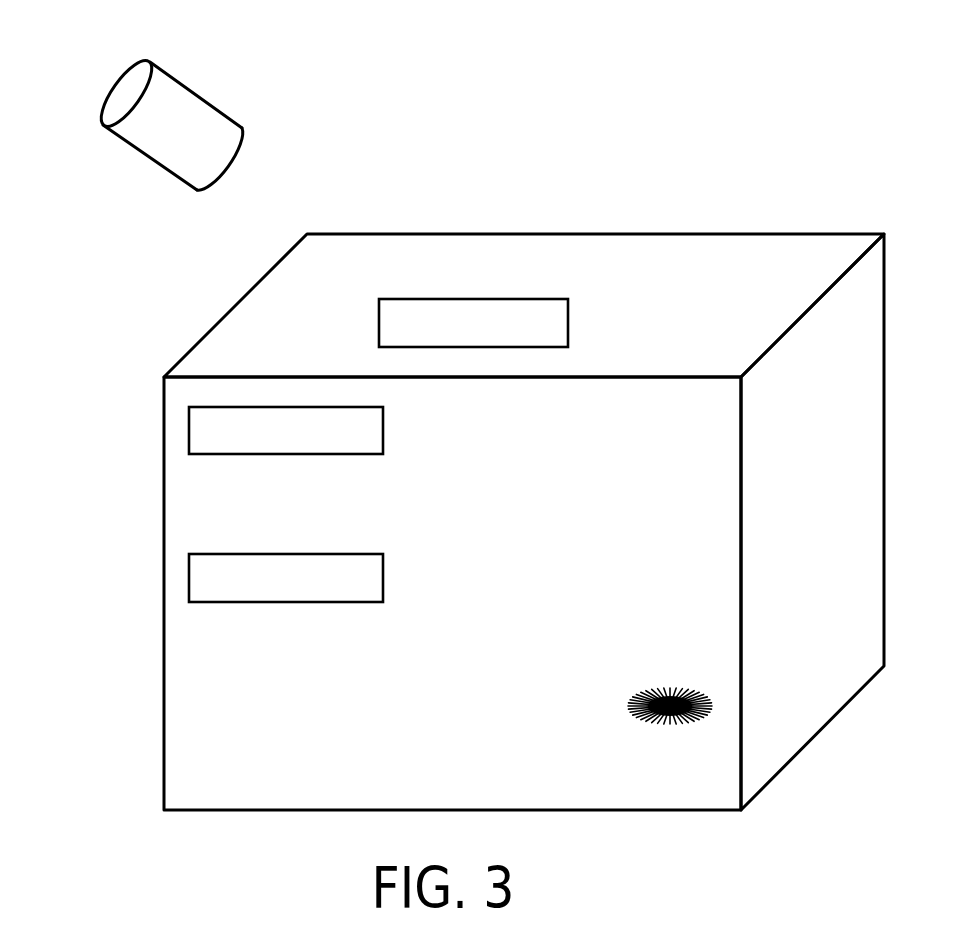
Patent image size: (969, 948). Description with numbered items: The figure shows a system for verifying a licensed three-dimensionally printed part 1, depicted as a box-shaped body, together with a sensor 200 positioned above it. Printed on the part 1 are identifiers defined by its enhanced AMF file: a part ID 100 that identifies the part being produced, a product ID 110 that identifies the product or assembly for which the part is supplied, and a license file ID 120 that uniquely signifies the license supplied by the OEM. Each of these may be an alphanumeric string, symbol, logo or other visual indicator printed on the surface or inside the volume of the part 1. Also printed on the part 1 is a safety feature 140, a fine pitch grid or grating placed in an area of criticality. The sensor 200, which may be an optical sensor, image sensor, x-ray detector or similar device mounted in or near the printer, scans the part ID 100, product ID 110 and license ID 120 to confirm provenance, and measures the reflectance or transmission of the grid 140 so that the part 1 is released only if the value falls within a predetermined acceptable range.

The sensor 200 is at (110, 83).
The part 1 is at (238, 286).
The product identification (ID) 110 is at (473, 323).
The part identification (ID) 100 is at (286, 430).
The license file ID 120 is at (286, 578).
The safety feature 140 is at (636, 684).